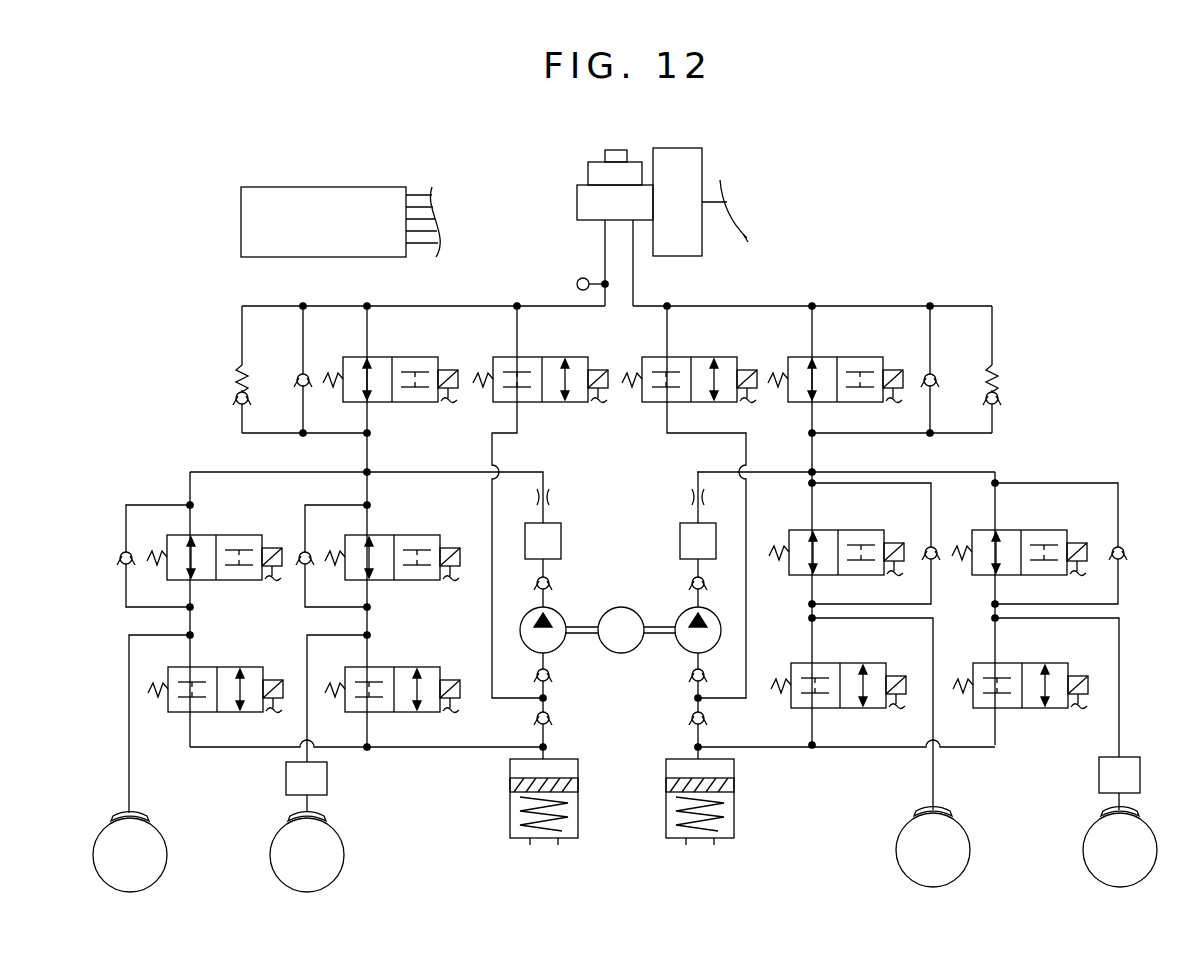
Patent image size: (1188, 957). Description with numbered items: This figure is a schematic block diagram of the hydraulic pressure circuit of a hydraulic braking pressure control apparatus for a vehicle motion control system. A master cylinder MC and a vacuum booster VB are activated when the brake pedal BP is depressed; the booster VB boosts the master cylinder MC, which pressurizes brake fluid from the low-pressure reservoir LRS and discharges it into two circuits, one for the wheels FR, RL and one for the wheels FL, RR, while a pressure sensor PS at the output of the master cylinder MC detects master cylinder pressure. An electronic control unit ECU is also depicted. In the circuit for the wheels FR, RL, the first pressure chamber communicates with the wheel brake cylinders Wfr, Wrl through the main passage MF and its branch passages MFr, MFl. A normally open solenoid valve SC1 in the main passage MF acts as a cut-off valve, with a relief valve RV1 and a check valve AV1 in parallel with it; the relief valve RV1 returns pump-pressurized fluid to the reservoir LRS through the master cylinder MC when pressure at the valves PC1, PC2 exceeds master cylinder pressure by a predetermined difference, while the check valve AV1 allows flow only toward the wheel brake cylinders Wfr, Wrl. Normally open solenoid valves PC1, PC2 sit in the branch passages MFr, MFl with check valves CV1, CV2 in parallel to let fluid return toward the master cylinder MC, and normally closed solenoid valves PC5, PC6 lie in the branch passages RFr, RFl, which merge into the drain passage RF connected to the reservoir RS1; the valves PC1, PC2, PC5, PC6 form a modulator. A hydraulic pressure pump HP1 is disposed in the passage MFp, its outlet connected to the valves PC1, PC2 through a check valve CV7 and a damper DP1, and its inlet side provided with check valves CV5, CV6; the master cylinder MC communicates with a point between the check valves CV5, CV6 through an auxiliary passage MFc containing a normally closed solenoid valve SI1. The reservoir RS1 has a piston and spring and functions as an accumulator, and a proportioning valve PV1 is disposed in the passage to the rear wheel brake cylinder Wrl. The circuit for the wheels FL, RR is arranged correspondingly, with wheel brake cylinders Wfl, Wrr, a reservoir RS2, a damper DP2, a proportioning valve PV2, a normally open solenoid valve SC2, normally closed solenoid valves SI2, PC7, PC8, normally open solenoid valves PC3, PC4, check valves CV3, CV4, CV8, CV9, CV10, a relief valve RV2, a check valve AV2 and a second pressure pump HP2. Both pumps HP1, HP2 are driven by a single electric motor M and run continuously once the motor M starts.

The electronic control unit ECU is at (340, 222).
The master cylinder MC is at (577, 196).
The low-pressure reservoir LRS is at (588, 164).
The vacuum booster VB is at (690, 257).
The brake pedal BP is at (733, 205).
The pressure sensor PS is at (578, 280).
The relief valve RV1 is at (236, 385).
The check valve AV1 is at (296, 383).
The first solenoid valve SC1 is at (393, 357).
The second solenoid valve SI1 is at (543, 357).
The solenoid valve SI2 is at (692, 357).
The solenoid valve SC2 is at (836, 357).
The check valve AV2 is at (950, 372).
The relief valve RV2 is at (997, 385).
The main passage MF is at (367, 460).
The auxiliary passage MFc is at (492, 465).
The passage MFp is at (543, 482).
The branch passage MFr is at (197, 484).
The branch passage MFl is at (367, 491).
The check valve CV1 is at (126, 550).
The solenoid valve PC1 is at (212, 535).
The check valve CV2 is at (305, 550).
The solenoid valve PC2 is at (392, 535).
The solenoid valve PC5 is at (216, 667).
The solenoid valve PC6 is at (392, 667).
The solenoid valve PC3 is at (836, 530).
The check valve CV3 is at (925, 551).
The solenoid valve PC4 is at (1019, 530).
The check valve CV4 is at (1112, 551).
The solenoid valve PC7 is at (837, 663).
The solenoid valve PC8 is at (1019, 663).
The damper DP1 is at (561, 538).
The damper DP2 is at (680, 538).
The check valve CV7 is at (549, 582).
The check valve CV10 is at (692, 582).
The hydraulic pressure pump HP1 is at (560, 611).
The pressure pump HP2 is at (682, 611).
The electric motor M is at (620, 630).
The check valve CV6 is at (549, 674).
The check valve CV9 is at (692, 674).
The check valve CV5 is at (549, 717).
The check valve CV8 is at (692, 717).
The reservoir RS1 is at (510, 785).
The reservoir RS2 is at (734, 785).
The drain passage RF is at (401, 750).
The branch passage RFr is at (233, 750).
The branch passage RFl is at (367, 736).
The wheel brake cylinder Wfr is at (113, 818).
The wheel FR is at (130, 857).
The proportioning valve PV1 is at (327, 778).
The rear wheel brake cylinder Wrl is at (289, 818).
The wheel RL is at (307, 857).
The front left wheel cylinder Wfl is at (948, 815).
The wheel FL is at (933, 852).
The proportioning valve PV2 is at (1099, 776).
The rear right wheel cylinder Wrr is at (1136, 815).
The wheel RR is at (1119, 852).